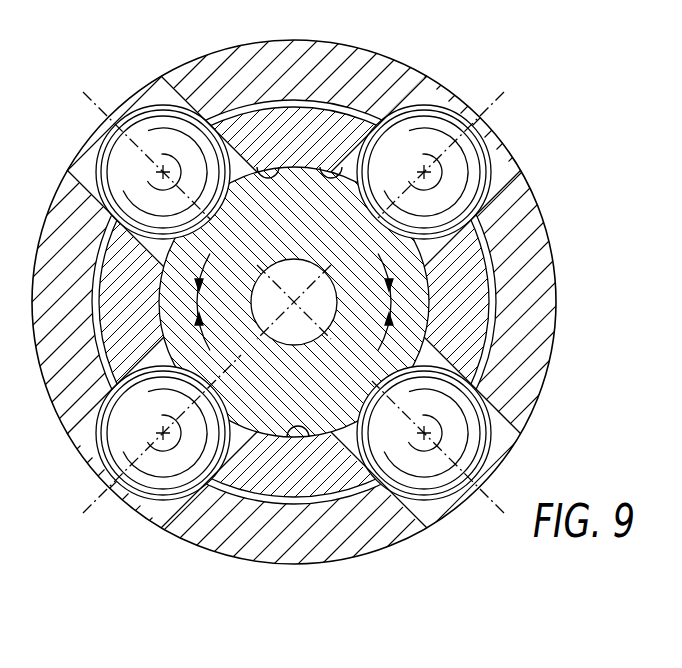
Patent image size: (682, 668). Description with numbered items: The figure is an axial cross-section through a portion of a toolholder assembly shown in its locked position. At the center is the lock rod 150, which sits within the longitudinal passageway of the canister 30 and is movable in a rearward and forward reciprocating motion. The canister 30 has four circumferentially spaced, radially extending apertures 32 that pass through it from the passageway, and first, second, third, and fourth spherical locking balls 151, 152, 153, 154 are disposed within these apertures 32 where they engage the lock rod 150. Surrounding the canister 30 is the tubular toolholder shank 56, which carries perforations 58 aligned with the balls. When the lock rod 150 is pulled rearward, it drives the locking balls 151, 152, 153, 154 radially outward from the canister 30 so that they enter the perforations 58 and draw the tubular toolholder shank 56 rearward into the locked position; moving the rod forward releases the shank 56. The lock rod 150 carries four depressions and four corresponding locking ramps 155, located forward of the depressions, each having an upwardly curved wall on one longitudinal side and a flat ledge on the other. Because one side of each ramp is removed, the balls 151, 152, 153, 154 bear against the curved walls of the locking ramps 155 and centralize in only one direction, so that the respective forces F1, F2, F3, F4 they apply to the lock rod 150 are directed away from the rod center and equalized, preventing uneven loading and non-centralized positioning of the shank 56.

The tubular toolholder shank 56 is at (333, 52).
The perforations 58 is at (84, 172).
The canister 30 is at (102, 307).
The apertures 32 is at (118, 232).
The lock rod 150 is at (400, 302).
The first spherical locking ball 151 is at (145, 125).
The second spherical locking ball 152 is at (470, 142).
The third spherical locking ball 153 is at (431, 488).
The fourth spherical locking ball 154 is at (108, 440).
The locking ramps 155 is at (303, 455).
The force F1 is at (166, 283).
The force F2 is at (472, 240).
The force F3 is at (418, 326).
The force F4 is at (170, 343).